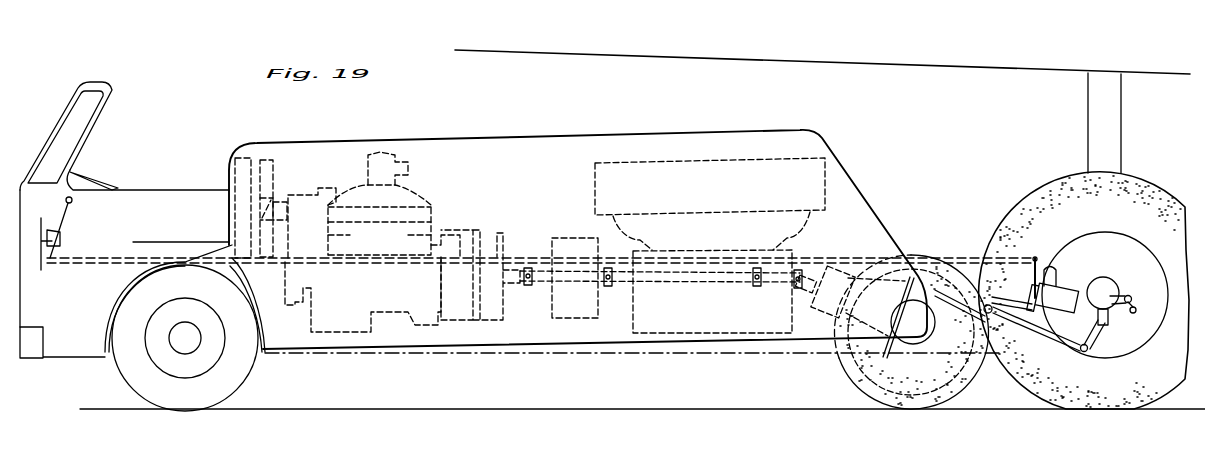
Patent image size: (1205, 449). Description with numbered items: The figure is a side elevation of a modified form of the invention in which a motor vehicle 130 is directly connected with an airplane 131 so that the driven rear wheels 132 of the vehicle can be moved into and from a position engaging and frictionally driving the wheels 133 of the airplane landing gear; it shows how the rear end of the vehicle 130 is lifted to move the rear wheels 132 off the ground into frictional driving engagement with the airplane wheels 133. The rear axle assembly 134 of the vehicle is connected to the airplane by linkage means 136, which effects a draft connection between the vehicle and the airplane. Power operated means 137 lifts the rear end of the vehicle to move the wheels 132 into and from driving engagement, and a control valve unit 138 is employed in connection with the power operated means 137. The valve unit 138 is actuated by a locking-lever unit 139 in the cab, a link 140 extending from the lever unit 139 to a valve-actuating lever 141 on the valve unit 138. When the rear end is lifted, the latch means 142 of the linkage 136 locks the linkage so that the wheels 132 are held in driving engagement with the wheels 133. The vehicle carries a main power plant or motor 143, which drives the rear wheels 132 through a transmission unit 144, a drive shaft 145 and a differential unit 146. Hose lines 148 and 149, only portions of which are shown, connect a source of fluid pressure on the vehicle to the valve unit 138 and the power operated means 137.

The motor vehicle 130 is at (578, 134).
The airplane 131 is at (1086, 104).
The driven rear wheels 132 is at (913, 383).
The airplane landing gear wheels 133 is at (1060, 393).
The rear axle assembly 134 is at (888, 264).
The linkage means 136 is at (1047, 327).
The power operated means 137 is at (1082, 290).
The control valve unit 138 is at (1070, 290).
The locking-lever unit 139 is at (73, 224).
The link 140 is at (123, 256).
The valve-actuating lever 141 is at (1038, 257).
The latch means 142 is at (1136, 305).
The main power plant or motor 143 is at (345, 320).
The transmission unit 144 is at (480, 237).
The drive shaft 145 is at (703, 280).
The differential unit 146 is at (889, 343).
The hose line 148 is at (1030, 285).
The hose line 149 is at (1051, 276).